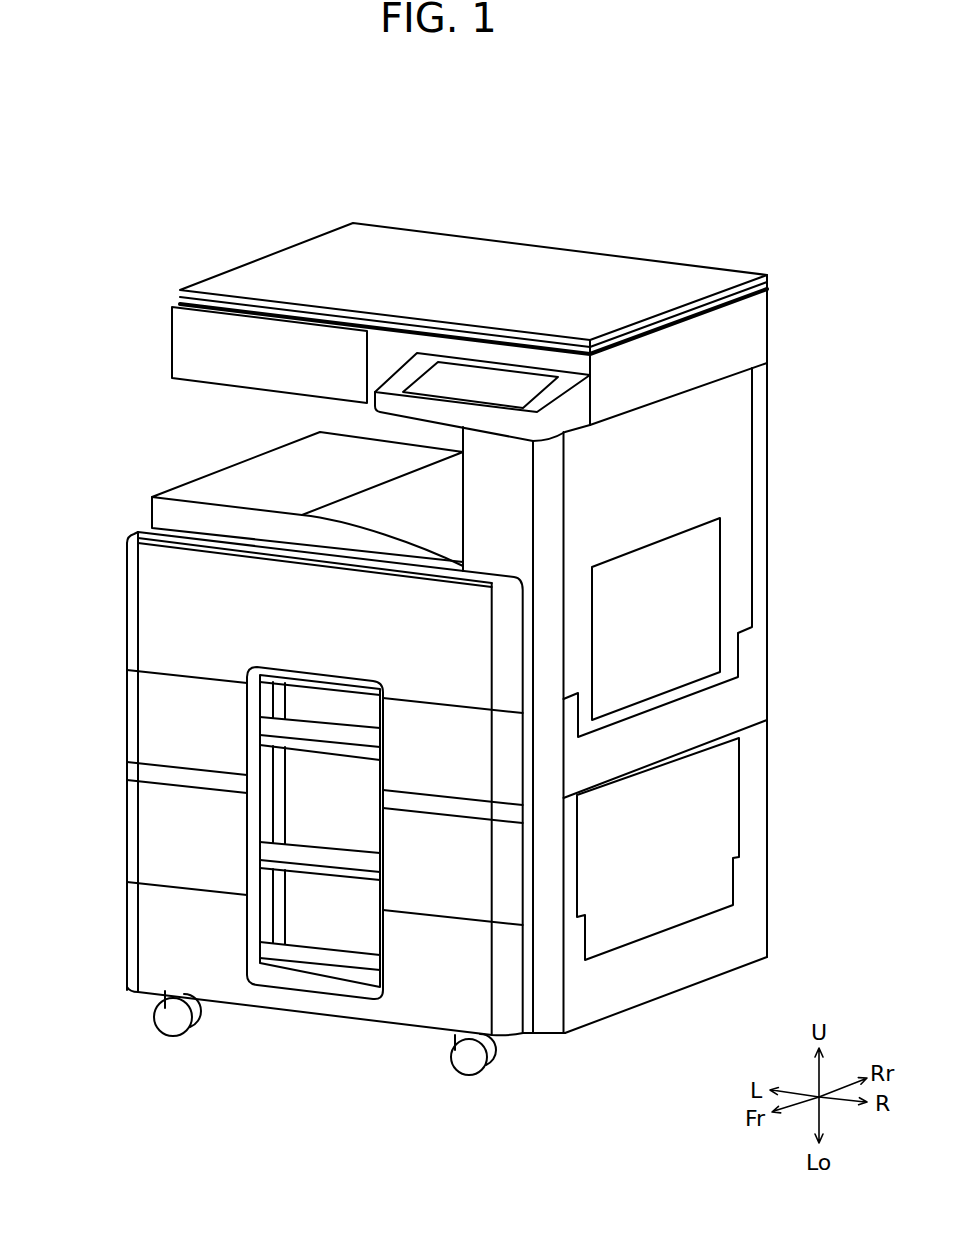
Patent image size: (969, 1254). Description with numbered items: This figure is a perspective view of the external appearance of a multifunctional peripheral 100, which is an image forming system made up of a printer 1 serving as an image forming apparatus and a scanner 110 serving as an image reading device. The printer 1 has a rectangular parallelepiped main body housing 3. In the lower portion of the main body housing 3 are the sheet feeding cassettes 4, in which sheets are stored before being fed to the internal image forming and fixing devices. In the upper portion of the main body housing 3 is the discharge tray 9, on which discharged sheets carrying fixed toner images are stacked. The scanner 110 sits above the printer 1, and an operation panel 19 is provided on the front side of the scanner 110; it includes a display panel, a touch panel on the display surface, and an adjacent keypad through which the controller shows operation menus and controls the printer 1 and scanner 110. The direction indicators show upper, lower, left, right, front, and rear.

The multifunctional peripheral 100 is at (635, 137).
The scanner 110 is at (777, 317).
The printer 1 is at (777, 387).
The main body housing 3 is at (767, 450).
The discharge tray 9 is at (230, 487).
The operation panel 19 is at (373, 407).
The sheet feeding cassette 4 is at (125, 710).